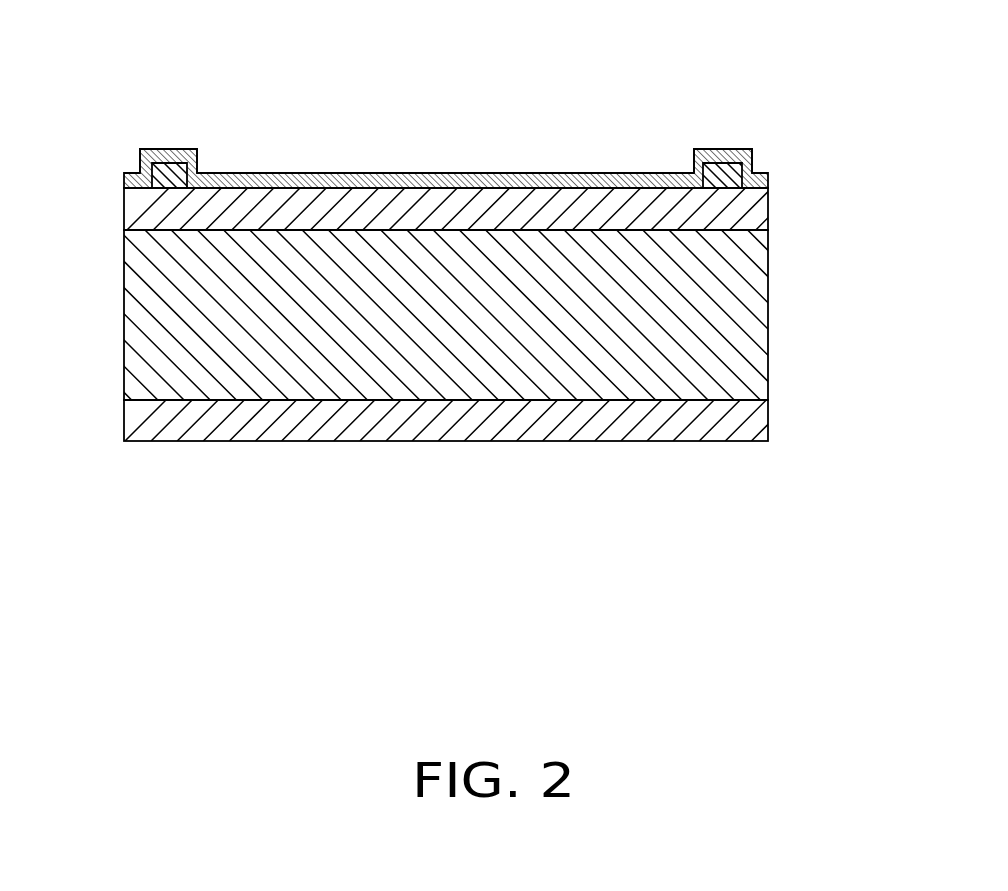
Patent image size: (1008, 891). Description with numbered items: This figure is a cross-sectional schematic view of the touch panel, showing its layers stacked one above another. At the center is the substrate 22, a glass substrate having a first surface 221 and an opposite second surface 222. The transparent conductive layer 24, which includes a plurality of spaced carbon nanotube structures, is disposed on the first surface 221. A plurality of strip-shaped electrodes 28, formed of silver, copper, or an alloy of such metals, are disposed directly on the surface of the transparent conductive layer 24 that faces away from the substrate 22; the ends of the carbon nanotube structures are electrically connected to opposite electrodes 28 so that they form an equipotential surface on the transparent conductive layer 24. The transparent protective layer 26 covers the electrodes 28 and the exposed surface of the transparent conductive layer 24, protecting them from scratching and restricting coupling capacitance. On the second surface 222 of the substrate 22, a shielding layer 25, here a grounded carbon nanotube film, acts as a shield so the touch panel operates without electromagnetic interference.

The substrate 22 is at (707, 332).
The first surface 221 is at (207, 233).
The second surface 222 is at (217, 397).
The transparent conductive layer 24 is at (732, 209).
The shielding layer 25 is at (603, 417).
The transparent protective layer 26 is at (303, 175).
The electrodes 28 is at (166, 163).